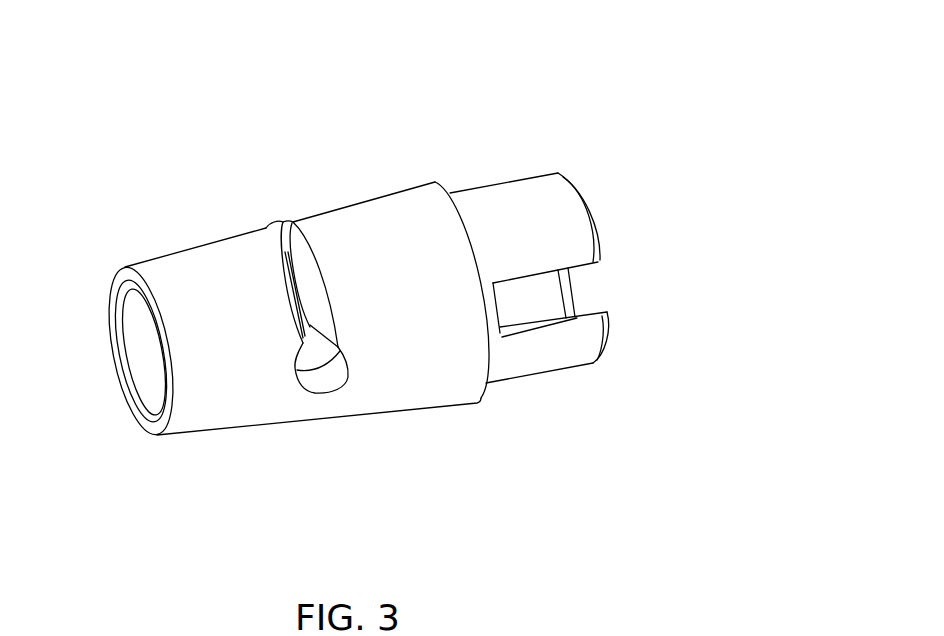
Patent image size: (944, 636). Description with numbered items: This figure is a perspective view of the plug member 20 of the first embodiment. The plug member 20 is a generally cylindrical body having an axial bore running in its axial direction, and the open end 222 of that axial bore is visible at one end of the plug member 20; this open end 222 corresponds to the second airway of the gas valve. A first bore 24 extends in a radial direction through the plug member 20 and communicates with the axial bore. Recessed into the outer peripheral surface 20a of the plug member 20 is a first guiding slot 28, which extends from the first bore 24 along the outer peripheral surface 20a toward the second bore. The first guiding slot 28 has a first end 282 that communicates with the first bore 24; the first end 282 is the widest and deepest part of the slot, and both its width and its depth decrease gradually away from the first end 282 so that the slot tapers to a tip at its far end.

The plug member 20 is at (514, 168).
The outer peripheral surface 20a is at (383, 195).
The open end 222 is at (138, 358).
The first bore 24 is at (323, 380).
The first guiding slot 28 is at (293, 240).
The first end 282 is at (318, 310).